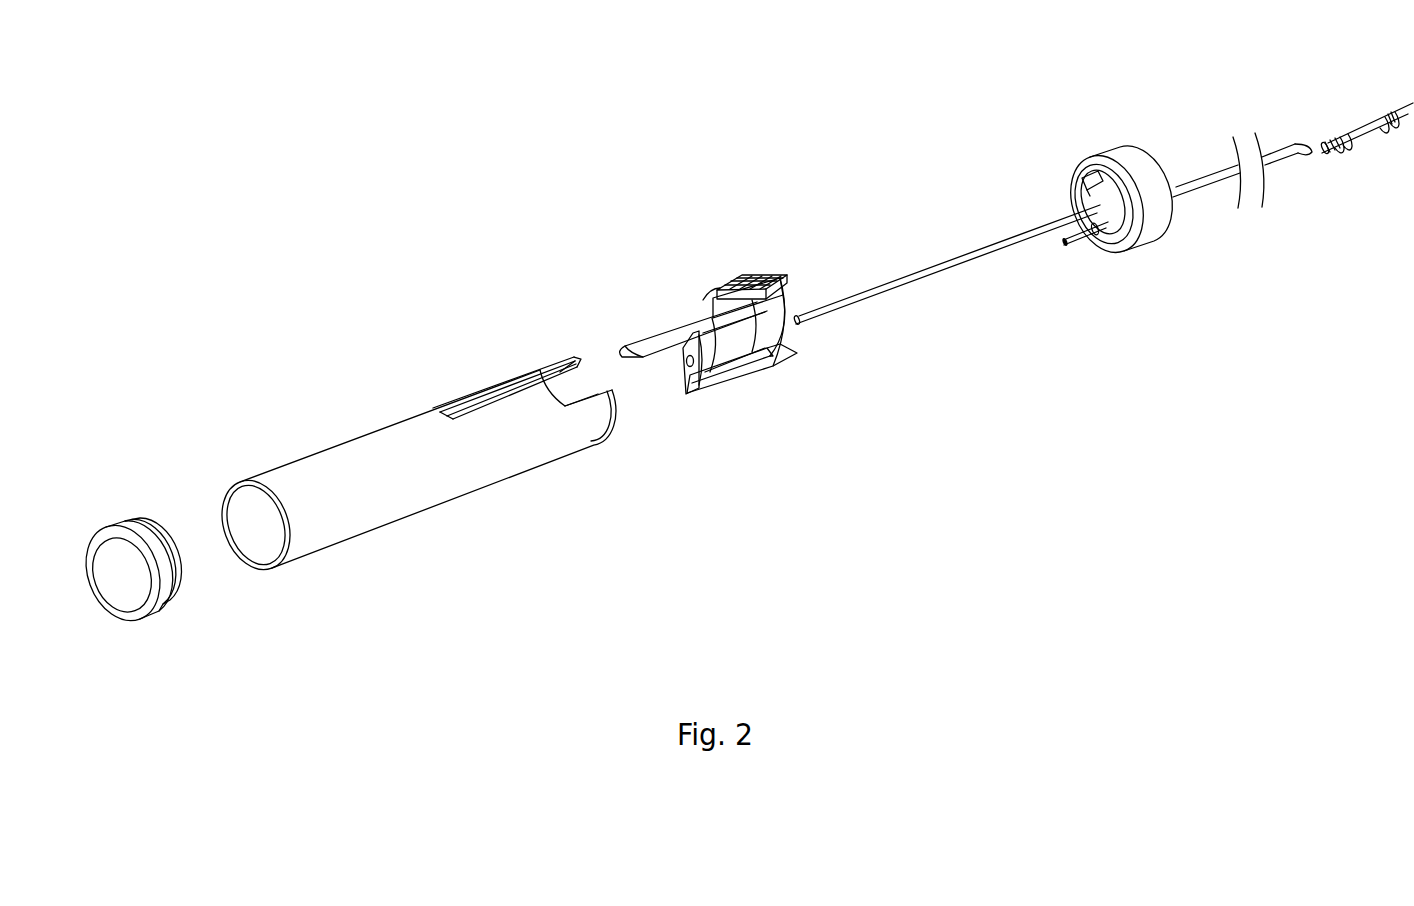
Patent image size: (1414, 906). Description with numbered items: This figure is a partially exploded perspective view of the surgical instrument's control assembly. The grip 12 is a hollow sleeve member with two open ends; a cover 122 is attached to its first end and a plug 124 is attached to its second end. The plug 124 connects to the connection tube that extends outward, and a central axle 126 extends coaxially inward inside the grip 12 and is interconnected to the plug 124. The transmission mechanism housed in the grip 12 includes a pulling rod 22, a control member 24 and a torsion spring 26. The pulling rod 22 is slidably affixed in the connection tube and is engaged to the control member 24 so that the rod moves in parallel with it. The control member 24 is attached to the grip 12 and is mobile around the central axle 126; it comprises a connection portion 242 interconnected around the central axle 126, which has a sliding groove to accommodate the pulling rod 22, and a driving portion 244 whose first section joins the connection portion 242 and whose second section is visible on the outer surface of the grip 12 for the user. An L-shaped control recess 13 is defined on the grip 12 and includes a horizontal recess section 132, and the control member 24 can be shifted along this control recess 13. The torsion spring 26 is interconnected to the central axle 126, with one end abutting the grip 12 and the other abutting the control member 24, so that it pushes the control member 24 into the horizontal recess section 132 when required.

The grip 12 is at (327, 380).
The cover 122 is at (113, 553).
The L-shaped control recess 13 is at (499, 388).
The horizontal recess section 132 is at (560, 373).
The control member 24 is at (774, 399).
The connection portion 242 is at (718, 377).
The driving portion 244 is at (737, 277).
The central axle 126 is at (913, 267).
The plug 124 is at (1153, 170).
The torsion spring 26 is at (1093, 187).
The pulling rod 22 is at (1093, 245).